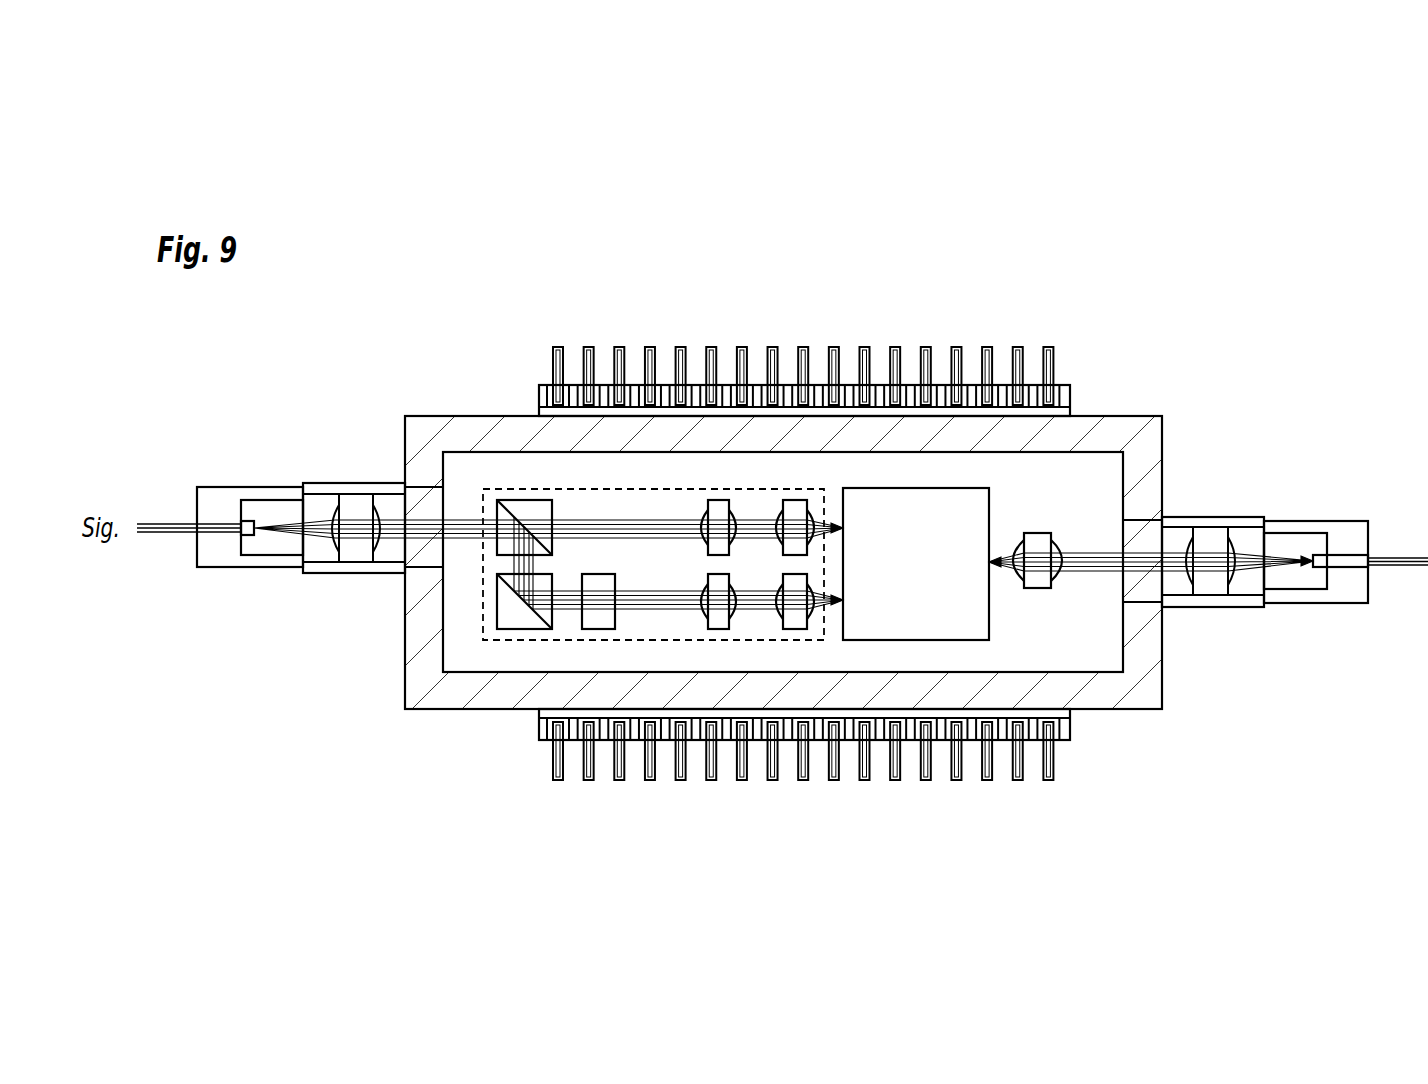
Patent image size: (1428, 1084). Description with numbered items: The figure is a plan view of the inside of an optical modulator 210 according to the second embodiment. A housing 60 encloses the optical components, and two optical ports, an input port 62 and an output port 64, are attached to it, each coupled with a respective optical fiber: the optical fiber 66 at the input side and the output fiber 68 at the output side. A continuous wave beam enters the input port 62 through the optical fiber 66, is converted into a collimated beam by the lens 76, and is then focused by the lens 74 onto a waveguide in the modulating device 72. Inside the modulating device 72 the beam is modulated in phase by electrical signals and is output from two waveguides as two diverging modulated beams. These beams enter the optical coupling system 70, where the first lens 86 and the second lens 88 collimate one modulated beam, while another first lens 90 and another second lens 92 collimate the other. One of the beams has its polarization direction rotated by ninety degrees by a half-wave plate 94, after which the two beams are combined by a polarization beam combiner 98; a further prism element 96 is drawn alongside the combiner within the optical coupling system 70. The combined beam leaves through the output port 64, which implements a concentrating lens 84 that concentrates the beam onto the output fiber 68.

The optical modulator 210 is at (1187, 300).
The housing 60 is at (1138, 415).
The input port 62 is at (1252, 517).
The output port 64 is at (333, 486).
The optical fiber 66 is at (1405, 555).
The output fiber 68 is at (152, 523).
The optical coupling system 70 is at (497, 489).
The optical modulator (modulating device) 72 is at (995, 633).
The lens 74 is at (1038, 535).
The lens 76 is at (1208, 540).
The concentrating lens 84 is at (355, 508).
The first lens 86 is at (794, 626).
The second lens 88 is at (713, 626).
The another first lens 90 is at (793, 507).
The another second lens 92 is at (718, 503).
The half-wave plate 94 is at (605, 622).
The beam splitter prism 96 is at (523, 620).
The polarization beam combiner 98 is at (537, 507).